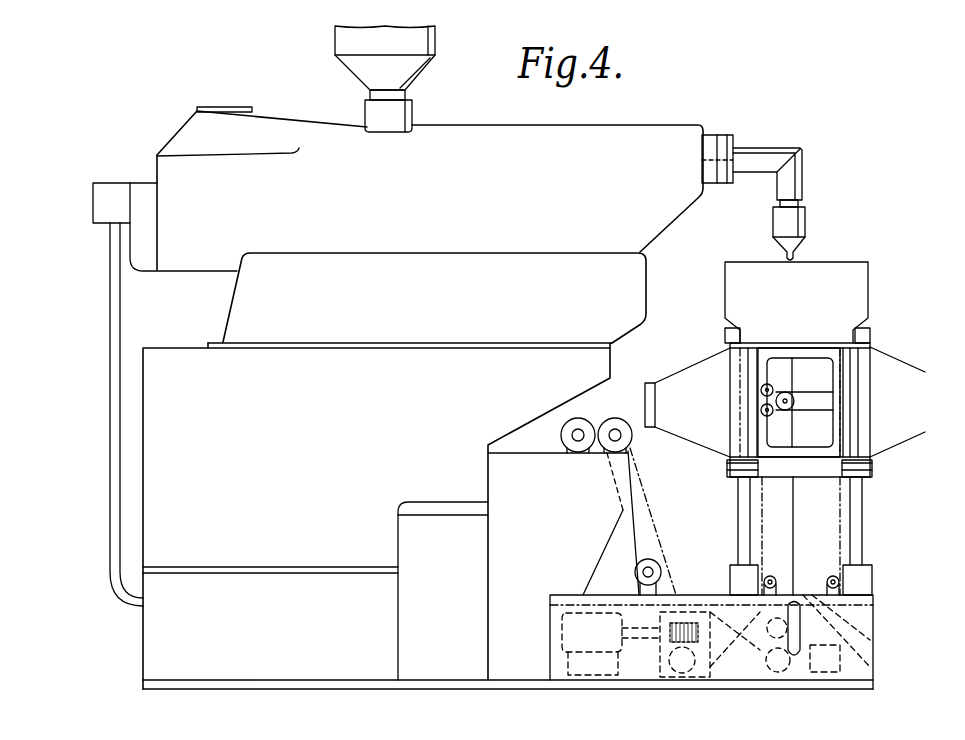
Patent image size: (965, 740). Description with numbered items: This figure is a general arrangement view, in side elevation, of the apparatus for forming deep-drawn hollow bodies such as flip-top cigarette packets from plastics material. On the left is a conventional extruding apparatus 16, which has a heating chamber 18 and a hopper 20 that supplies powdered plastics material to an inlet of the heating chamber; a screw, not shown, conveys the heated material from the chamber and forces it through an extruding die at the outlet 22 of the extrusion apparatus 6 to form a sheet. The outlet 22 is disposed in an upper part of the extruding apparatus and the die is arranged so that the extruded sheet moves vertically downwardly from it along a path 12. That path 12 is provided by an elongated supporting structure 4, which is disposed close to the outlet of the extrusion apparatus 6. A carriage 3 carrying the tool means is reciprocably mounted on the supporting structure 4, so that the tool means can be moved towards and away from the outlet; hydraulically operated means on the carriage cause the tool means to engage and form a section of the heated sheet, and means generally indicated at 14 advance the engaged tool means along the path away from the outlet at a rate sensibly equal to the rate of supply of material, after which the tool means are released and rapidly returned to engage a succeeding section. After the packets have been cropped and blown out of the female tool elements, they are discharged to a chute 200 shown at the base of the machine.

The extruding apparatus 16 is at (170, 124).
The heating chamber 18 is at (434, 263).
The hopper 20 is at (435, 43).
The extrusion apparatus 6 is at (773, 223).
The outlet 22 is at (796, 253).
The means for advancing the engaged tool means 14 is at (779, 384).
The carriage 3 is at (895, 361).
The path 12 is at (792, 493).
The elongated supporting structure 4 is at (865, 520).
The chute 200 is at (870, 636).